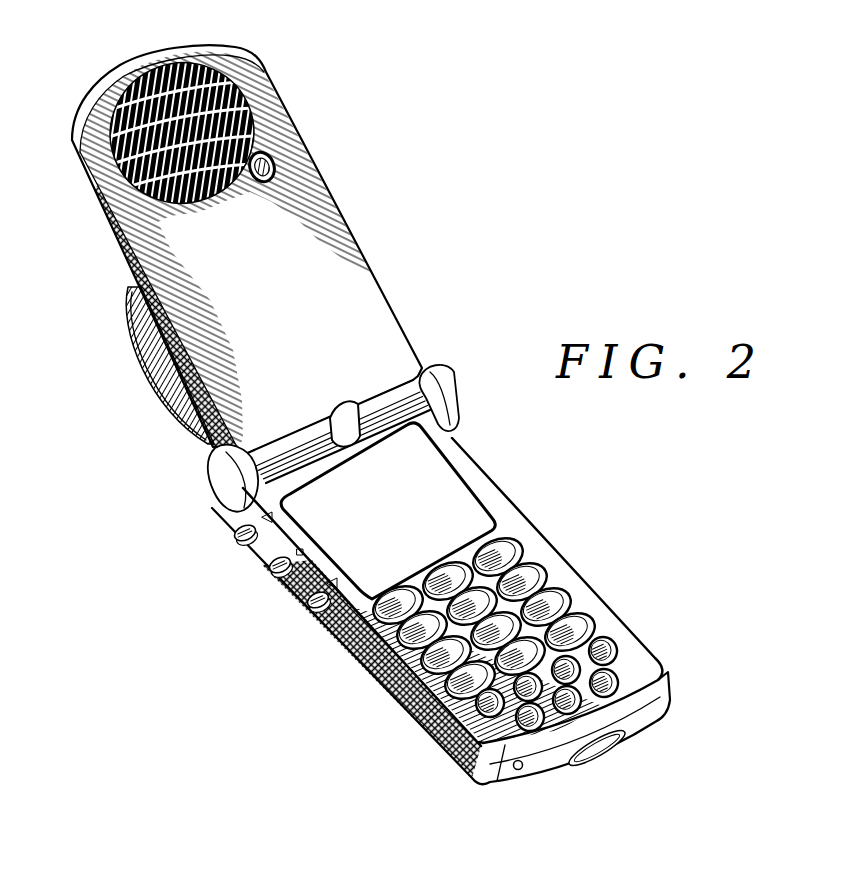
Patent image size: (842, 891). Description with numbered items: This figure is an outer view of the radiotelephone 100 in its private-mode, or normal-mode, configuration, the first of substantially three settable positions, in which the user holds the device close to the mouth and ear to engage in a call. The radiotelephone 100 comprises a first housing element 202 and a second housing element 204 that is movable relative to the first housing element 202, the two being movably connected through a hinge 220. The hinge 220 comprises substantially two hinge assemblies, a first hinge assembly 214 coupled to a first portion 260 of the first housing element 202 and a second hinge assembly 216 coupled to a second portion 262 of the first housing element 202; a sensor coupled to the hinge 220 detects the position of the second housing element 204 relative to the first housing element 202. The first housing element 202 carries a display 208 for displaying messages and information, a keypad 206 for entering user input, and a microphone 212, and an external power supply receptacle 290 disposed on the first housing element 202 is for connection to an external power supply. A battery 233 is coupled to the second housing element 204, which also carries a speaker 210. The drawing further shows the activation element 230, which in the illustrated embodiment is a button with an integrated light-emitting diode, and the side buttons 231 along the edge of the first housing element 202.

The radiotelephone 100 is at (395, 434).
The first housing element 202 is at (643, 638).
The second housing element 204 is at (350, 222).
The keypad 206 is at (417, 663).
The display 208 is at (473, 520).
The speaker 210 is at (232, 93).
The microphone 212 is at (530, 737).
The first hinge assembly 214 is at (317, 453).
The second hinge assembly 216 is at (380, 418).
The hinge 220 is at (336, 442).
The activation element 230 is at (274, 150).
The side buttons 231 is at (300, 588).
The battery 233 is at (170, 373).
The first portion 260 is at (210, 508).
The second portion 262 is at (437, 374).
The external power supply receptacle 290 is at (596, 757).